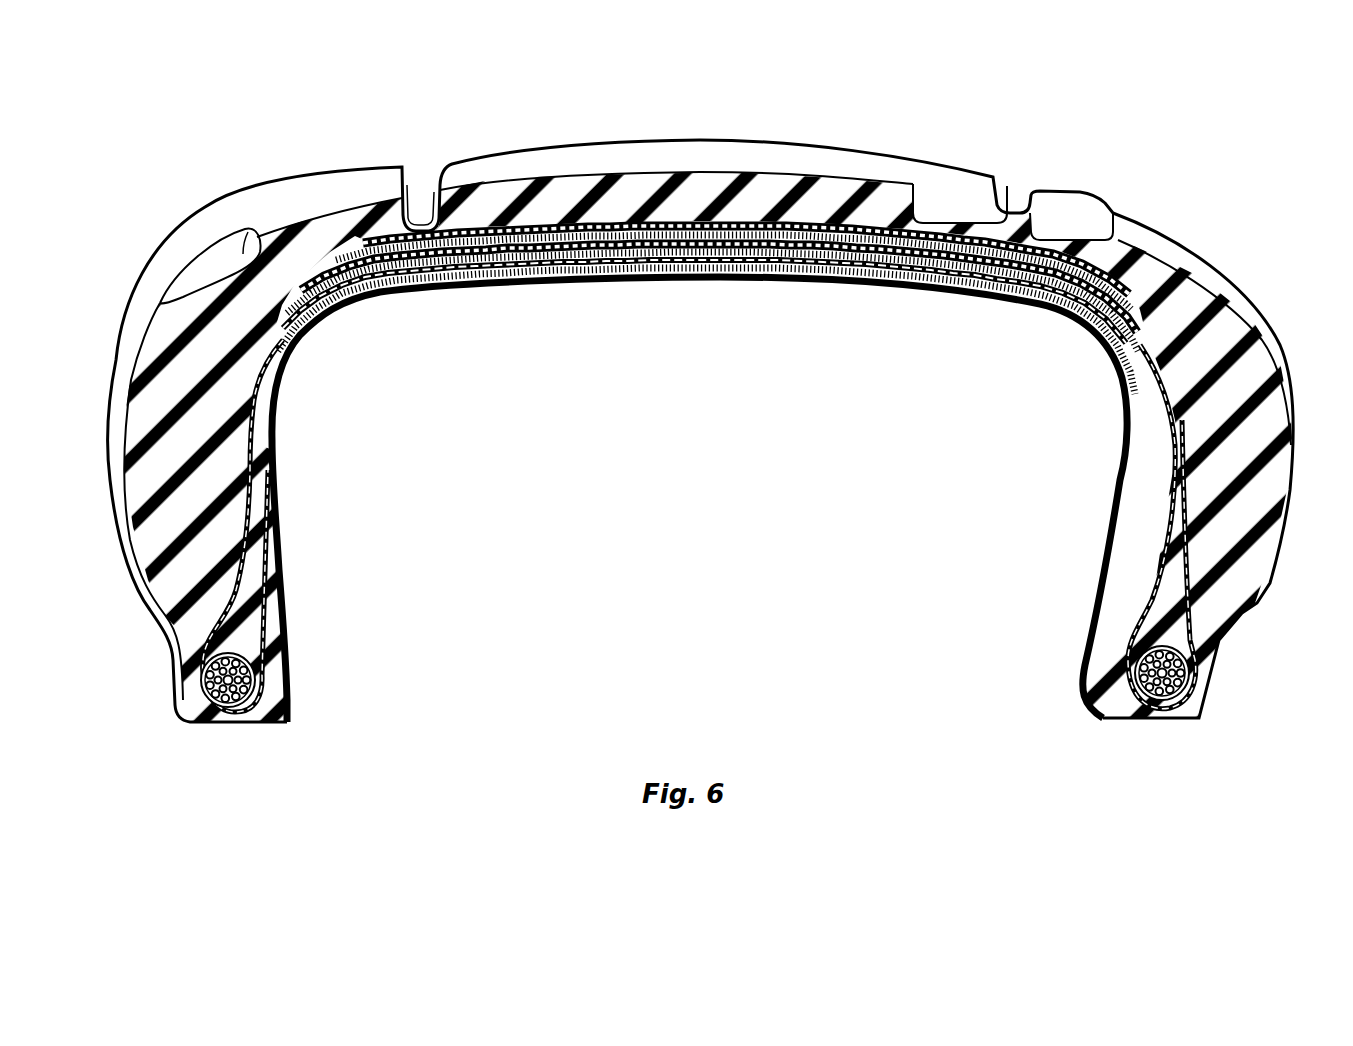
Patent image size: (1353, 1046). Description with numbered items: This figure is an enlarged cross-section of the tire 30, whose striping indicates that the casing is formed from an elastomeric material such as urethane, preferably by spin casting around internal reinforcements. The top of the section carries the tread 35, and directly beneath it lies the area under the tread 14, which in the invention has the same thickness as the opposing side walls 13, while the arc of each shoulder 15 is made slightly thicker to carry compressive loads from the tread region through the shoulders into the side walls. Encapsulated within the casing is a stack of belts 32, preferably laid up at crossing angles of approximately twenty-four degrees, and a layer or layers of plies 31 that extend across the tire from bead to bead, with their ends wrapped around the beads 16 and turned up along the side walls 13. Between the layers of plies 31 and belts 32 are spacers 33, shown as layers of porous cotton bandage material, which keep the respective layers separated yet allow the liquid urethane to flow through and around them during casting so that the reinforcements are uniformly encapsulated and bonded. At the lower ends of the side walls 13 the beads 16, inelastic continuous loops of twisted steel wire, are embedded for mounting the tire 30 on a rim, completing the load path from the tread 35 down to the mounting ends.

The tire 30 is at (1186, 193).
The tread 35 is at (773, 187).
The belts 32 is at (393, 243).
The spacers 33 is at (623, 222).
The area under the tread 14 is at (860, 283).
The plies 31 is at (297, 347).
The shoulder 15 is at (160, 340).
The side walls 13 is at (152, 540).
The beads 16 is at (232, 680).